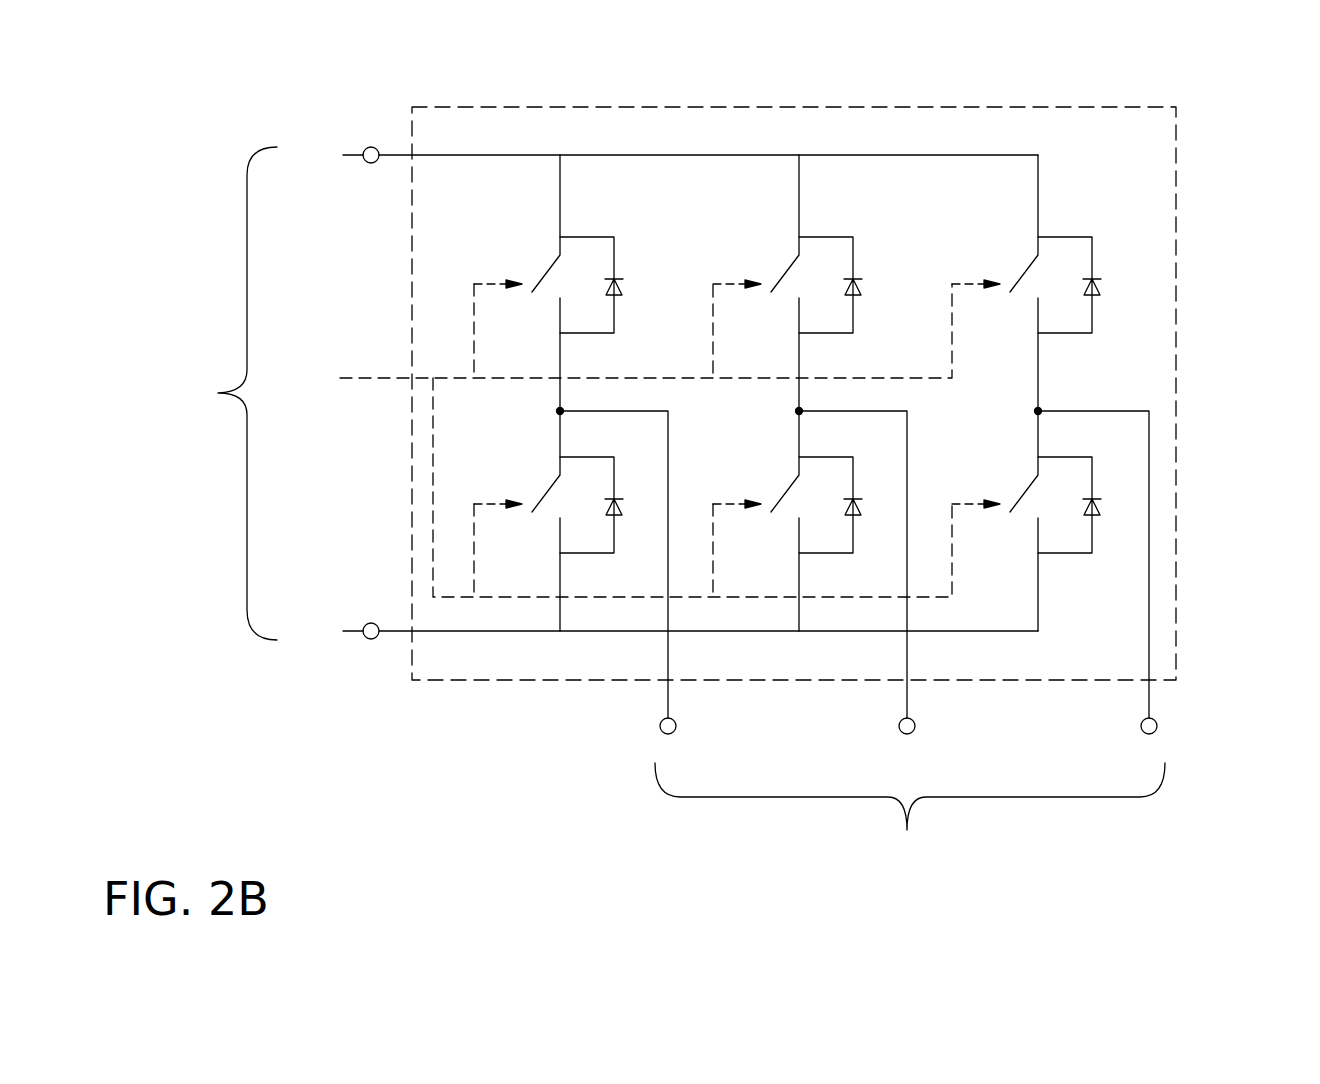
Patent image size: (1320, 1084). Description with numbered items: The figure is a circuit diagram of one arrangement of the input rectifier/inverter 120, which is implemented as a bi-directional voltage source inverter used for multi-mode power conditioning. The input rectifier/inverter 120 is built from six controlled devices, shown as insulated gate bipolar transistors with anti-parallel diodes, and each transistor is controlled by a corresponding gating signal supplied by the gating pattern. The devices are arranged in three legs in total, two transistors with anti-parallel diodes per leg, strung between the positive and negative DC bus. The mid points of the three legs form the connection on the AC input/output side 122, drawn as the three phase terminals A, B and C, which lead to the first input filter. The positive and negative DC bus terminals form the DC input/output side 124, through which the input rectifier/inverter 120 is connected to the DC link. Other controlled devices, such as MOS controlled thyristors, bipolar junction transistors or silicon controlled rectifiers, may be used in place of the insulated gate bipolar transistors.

The input rectifier/inverter 120 is at (1177, 222).
The AC input/output side 122 is at (907, 830).
The DC input/output side 124 is at (218, 393).